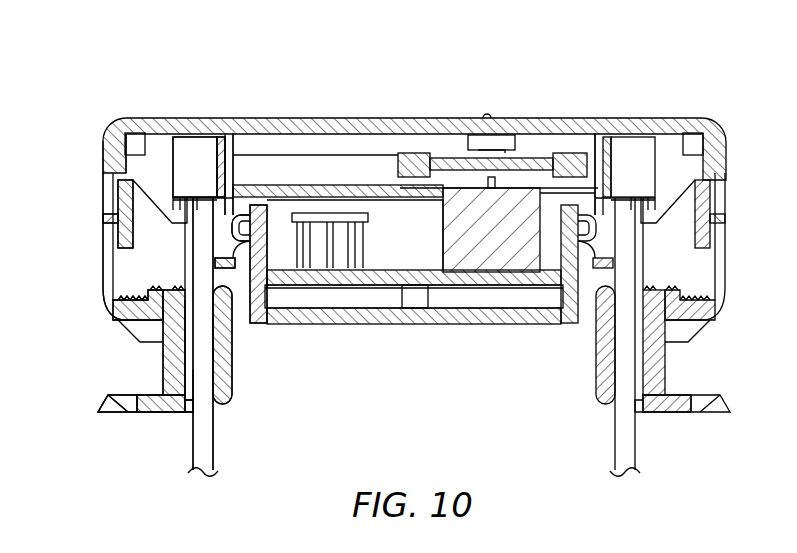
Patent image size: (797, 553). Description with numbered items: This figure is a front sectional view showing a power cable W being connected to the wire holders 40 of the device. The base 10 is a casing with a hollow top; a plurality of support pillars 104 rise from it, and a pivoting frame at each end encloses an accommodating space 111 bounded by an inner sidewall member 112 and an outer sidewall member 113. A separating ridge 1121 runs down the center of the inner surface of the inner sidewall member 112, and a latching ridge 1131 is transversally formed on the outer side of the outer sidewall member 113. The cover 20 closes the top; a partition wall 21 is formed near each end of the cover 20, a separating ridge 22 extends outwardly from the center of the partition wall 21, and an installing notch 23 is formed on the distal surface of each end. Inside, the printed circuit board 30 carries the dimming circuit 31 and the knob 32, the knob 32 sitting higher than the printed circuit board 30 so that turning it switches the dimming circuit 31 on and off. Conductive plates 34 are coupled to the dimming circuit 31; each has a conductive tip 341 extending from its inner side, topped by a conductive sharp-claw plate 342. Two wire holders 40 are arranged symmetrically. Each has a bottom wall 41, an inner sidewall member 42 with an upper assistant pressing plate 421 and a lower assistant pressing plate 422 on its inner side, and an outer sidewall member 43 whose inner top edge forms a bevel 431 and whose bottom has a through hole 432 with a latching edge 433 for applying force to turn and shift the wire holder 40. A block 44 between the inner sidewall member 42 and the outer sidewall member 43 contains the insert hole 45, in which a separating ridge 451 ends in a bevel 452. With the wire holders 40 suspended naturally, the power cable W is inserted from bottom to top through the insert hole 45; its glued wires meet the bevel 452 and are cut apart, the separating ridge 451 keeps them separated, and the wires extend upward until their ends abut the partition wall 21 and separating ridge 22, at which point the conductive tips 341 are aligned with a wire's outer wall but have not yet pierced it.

The base 10 is at (378, 318).
The support pillar 104 is at (414, 300).
The cover 20 is at (288, 126).
The partition wall 21 is at (220, 150).
The separating ridge 22 is at (190, 158).
The installing notch 23 is at (113, 197).
The printed circuit board 30 is at (466, 276).
The dimming circuit 31 is at (345, 216).
The knob 32 is at (568, 165).
The conductive plate 34 is at (253, 248).
The conductive tip 341 is at (224, 282).
The conductive sharp-claw plate 342 is at (233, 222).
The wire holder 40 is at (385, 346).
The bottom wall 41 is at (222, 372).
The inner sidewall member 42 is at (160, 310).
The upper assistant pressing plate 421 is at (118, 298).
The lower assistant pressing plate 422 is at (163, 312).
The outer sidewall member 43 is at (150, 408).
The bevel 431 is at (107, 396).
The through hole 432 is at (128, 403).
The latching edge 433 is at (128, 412).
The block 44 is at (174, 335).
The insert hole 45 is at (200, 385).
The separating ridge 451 is at (191, 365).
The bevel 452 is at (191, 410).
The accommodating space 111 is at (110, 233).
The inner sidewall member 112 is at (258, 252).
The outer sidewall member 113 is at (124, 190).
The separating ridge 1121 is at (243, 213).
The latching ridge 1131 is at (110, 219).
The power cable W is at (207, 453).